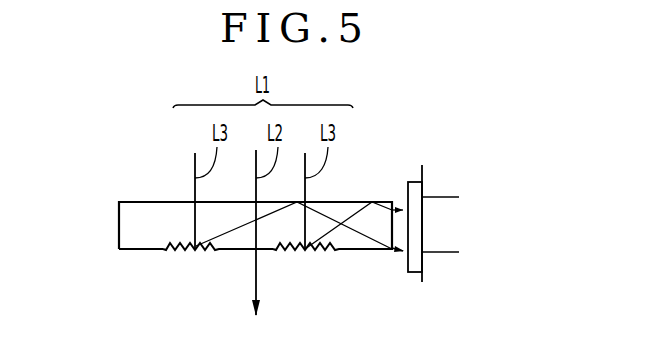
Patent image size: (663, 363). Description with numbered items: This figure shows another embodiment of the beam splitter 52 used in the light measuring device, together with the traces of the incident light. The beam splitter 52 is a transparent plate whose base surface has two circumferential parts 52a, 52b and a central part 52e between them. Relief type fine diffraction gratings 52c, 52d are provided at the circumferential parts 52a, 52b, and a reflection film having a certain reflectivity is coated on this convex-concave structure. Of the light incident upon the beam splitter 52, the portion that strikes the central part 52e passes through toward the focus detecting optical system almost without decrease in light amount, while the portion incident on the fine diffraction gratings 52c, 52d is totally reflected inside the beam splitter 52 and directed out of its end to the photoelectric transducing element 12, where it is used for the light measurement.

The beam splitter 52 is at (138, 205).
The circumferential part 52a is at (144, 241).
The circumferential part 52b is at (362, 242).
The fine diffraction grating 52c is at (183, 250).
The fine diffraction grating 52d is at (312, 252).
The central part 52e is at (267, 250).
The photoelectric transducing element 12 is at (460, 220).